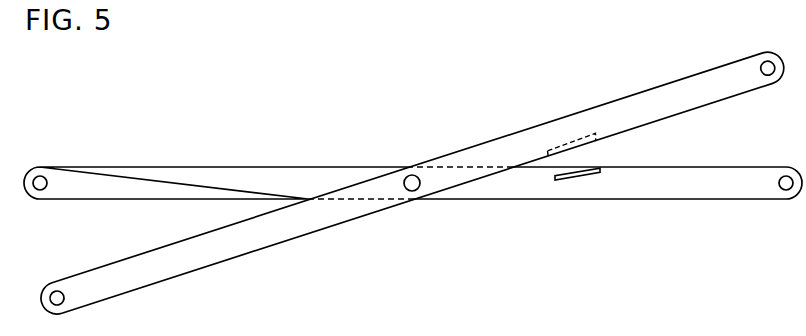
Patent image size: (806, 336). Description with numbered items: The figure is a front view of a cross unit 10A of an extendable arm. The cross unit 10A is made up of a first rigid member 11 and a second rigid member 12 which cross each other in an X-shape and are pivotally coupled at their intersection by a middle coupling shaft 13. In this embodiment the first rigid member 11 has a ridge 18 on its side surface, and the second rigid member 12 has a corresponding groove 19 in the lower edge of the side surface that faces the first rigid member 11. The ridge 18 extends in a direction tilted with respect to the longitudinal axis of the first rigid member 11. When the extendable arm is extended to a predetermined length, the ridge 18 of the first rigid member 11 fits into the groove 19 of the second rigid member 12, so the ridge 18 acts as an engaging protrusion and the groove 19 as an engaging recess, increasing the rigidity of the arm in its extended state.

The cross unit 10A is at (337, 122).
The first rigid member 11 is at (700, 187).
The second rigid member 12 is at (185, 260).
The middle coupling shaft 13 is at (415, 174).
The ridge 18 is at (577, 183).
The groove 19 is at (573, 140).